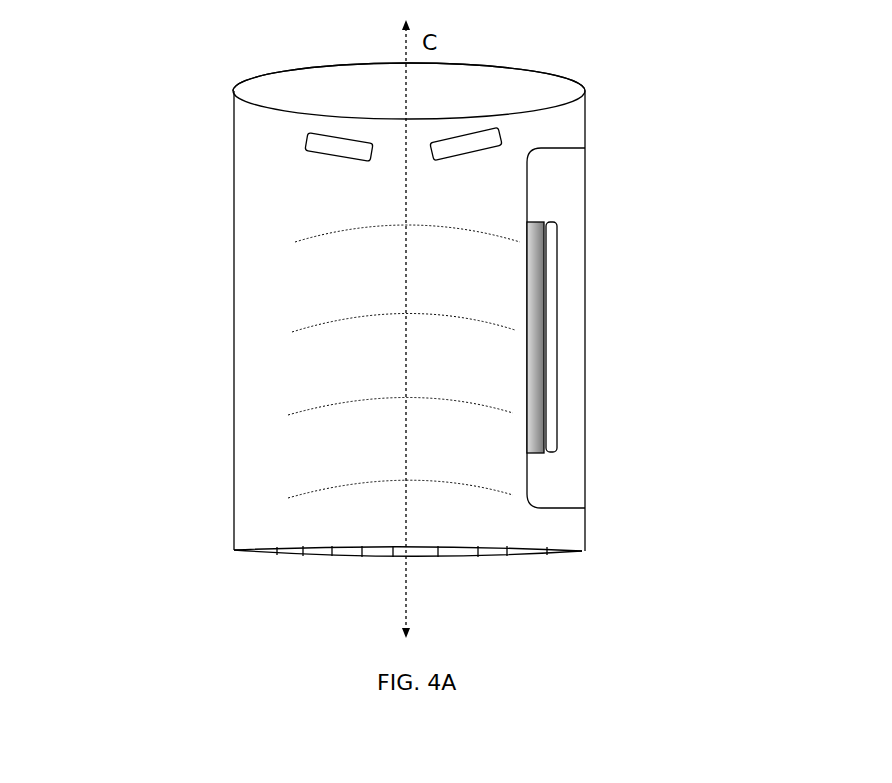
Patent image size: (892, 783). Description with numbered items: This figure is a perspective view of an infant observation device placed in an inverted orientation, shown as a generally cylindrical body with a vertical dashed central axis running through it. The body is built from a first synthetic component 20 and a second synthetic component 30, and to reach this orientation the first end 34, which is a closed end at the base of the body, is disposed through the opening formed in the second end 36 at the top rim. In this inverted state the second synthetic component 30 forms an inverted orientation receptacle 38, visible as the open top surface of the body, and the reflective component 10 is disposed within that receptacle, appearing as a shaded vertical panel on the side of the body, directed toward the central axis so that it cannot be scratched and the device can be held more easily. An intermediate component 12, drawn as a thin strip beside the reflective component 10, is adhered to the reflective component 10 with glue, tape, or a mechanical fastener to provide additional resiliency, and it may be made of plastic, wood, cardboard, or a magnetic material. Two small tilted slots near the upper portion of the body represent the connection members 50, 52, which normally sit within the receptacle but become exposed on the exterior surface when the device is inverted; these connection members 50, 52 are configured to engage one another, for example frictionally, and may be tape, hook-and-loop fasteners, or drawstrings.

The reflective component 10 is at (537, 220).
The intermediate component 12 is at (559, 270).
The first synthetic component 20 is at (528, 486).
The second synthetic component 30 is at (588, 536).
The first end 34 is at (232, 550).
The second end 36 is at (233, 93).
The inverted orientation receptacle 38 is at (535, 88).
The connection member 50 is at (320, 151).
The connection member 52 is at (431, 153).